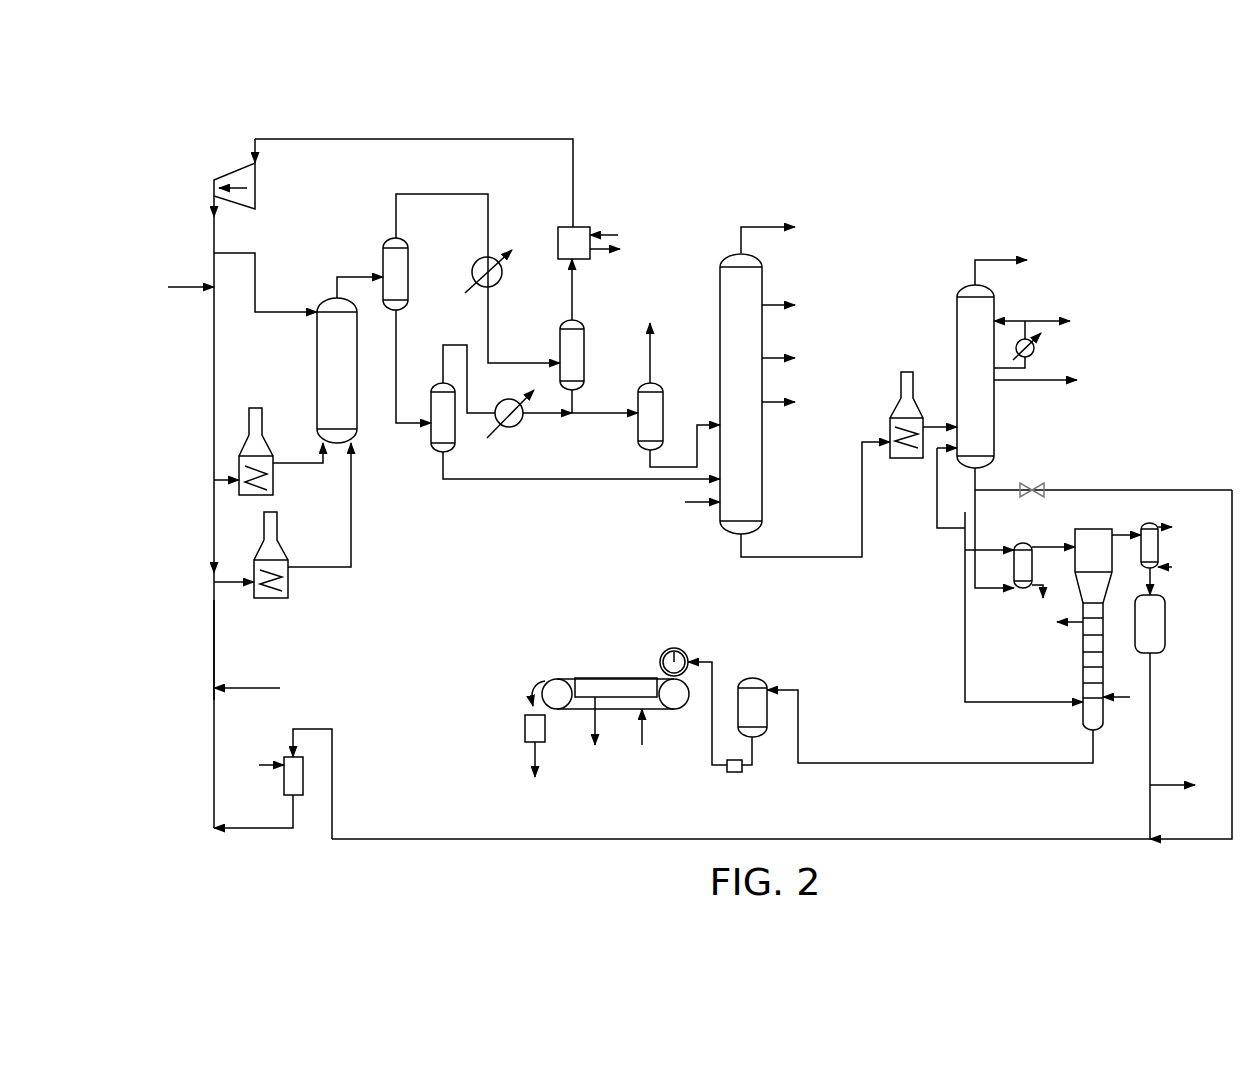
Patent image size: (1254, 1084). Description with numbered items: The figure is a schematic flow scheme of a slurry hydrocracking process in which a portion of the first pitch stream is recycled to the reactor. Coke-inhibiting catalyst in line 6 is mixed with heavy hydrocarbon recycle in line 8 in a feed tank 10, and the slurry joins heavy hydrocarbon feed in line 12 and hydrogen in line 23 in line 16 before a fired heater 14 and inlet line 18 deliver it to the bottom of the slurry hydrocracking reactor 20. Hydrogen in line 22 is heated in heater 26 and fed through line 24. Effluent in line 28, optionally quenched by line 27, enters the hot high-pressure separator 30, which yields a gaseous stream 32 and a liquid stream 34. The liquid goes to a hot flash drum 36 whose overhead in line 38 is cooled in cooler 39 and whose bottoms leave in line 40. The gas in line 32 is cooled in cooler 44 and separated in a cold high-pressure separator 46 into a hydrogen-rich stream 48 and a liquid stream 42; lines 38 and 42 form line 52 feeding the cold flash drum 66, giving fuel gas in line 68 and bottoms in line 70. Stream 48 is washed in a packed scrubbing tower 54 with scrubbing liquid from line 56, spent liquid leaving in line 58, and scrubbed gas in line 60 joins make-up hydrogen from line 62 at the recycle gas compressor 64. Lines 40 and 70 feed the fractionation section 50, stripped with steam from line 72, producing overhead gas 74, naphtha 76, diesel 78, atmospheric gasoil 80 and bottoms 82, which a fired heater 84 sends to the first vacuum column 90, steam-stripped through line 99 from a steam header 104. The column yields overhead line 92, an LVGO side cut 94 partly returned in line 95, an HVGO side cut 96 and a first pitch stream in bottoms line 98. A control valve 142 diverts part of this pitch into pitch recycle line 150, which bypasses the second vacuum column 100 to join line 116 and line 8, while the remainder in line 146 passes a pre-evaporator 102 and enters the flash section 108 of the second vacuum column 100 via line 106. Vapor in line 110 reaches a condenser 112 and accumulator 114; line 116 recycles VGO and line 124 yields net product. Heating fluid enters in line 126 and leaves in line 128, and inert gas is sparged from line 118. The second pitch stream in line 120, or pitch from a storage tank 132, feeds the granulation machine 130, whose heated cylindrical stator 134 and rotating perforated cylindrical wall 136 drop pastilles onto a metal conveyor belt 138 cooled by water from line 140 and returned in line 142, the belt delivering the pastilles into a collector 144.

The line 6 is at (261, 766).
The line 8 is at (475, 839).
The feed tank 10 is at (305, 778).
The line 12 is at (250, 686).
The fired heater 14 is at (278, 543).
The line 16 is at (216, 648).
The inlet line 18 is at (351, 515).
The slurry hydrocracking reactor 20 is at (317, 368).
The line 22 is at (213, 448).
The line 23 is at (213, 545).
The line 24 is at (300, 463).
The heater 26 is at (268, 443).
The quench line 27 is at (252, 277).
The line 28 is at (337, 284).
The hot high-pressure separator 30 is at (383, 258).
The gaseous stream line 32 is at (396, 215).
The liquid stream line 34 is at (397, 412).
The hot flash drum 36 is at (455, 440).
The vapor overhead line 38 is at (467, 330).
The cooler 39 is at (520, 426).
The bottoms line 40 is at (515, 479).
The liquid stream line 42 is at (574, 400).
The cooler 44 is at (472, 272).
The cold high-pressure separator 46 is at (584, 358).
The gaseous stream line 48 is at (572, 302).
The fractionation section 50 is at (710, 283).
The line 52 is at (597, 417).
The packed scrubbing tower 54 is at (558, 250).
The scrubbing liquid line 56 is at (618, 234).
The spent scrubbing liquid line 58 is at (600, 250).
The line 60 is at (573, 183).
The make-up hydrogen line 62 is at (172, 285).
The recycle gas compressor 64 is at (236, 208).
The cold flash drum 66 is at (663, 412).
The overhead gas line 68 is at (651, 360).
The liquid bottoms line 70 is at (650, 460).
The line 72 is at (685, 503).
The overhead gas product line 74 is at (755, 226).
The side cut line 76 is at (772, 302).
The side cut line 78 is at (772, 355).
The side cut line 80 is at (772, 399).
The bottoms line 82 is at (750, 557).
The fired heater 84 is at (895, 412).
The first vacuum column 90 is at (930, 328).
The overhead line 92 is at (990, 258).
The side cut line 94 is at (1030, 358).
The line 95 is at (1028, 318).
The side cut line 96 is at (1030, 382).
The bottoms line 98 is at (978, 478).
The line 99 is at (935, 497).
The second vacuum column 100 is at (1093, 468).
The pre-evaporator 102 is at (1020, 590).
The steam header 104 is at (963, 538).
The line 106 is at (1043, 540).
The flash section 108 is at (1080, 560).
The line 110 is at (1120, 530).
The condenser 112 is at (1158, 546).
The accumulator 114 is at (1166, 622).
The line 116 is at (1148, 727).
The line 118 is at (1055, 700).
The line 120 is at (992, 765).
The line 124 is at (1167, 785).
The line 126 is at (1130, 697).
The line 128 is at (1077, 623).
The granulation machine 130 is at (548, 644).
The storage tank 132 is at (755, 678).
The heated cylindrical stator 134 is at (672, 652).
The rotating perforated cylindrical wall 136 is at (684, 650).
The metal conveyor belt 138 is at (590, 678).
The line 140 is at (648, 740).
The control valve 142 is at (1040, 483).
The collector 144 is at (545, 735).
The line 146 is at (977, 518).
The pitch recycle line 150 is at (1212, 490).